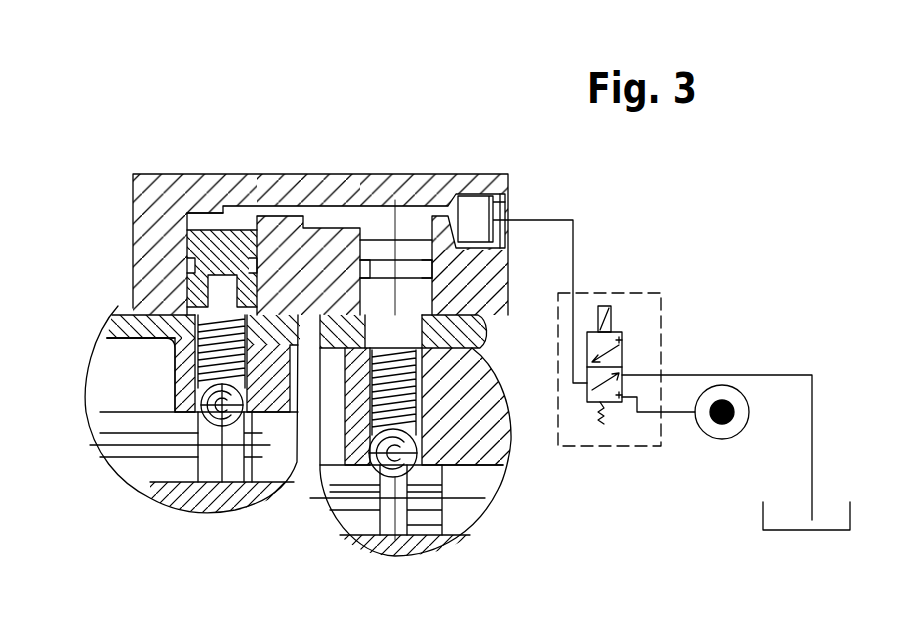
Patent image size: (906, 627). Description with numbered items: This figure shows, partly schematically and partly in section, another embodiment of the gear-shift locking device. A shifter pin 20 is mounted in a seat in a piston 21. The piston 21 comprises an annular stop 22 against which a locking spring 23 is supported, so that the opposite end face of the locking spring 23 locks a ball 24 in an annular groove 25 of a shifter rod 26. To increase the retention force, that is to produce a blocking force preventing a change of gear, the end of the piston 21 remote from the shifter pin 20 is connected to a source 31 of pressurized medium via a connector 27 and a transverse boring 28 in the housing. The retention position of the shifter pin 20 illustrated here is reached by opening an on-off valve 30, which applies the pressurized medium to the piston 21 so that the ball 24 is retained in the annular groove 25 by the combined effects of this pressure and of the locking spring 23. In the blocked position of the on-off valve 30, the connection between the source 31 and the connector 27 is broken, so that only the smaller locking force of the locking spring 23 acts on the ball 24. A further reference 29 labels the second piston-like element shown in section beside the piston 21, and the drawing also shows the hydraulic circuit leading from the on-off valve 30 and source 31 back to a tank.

The shifter pin 20 is at (187, 283).
The piston 21 is at (187, 240).
The annular stop 22 is at (105, 333).
The locking spring 23 is at (190, 360).
The ball 24 is at (178, 418).
The annular groove 25 is at (222, 485).
The shifter rod 26 is at (168, 472).
The connector 27 is at (505, 208).
The transverse boring 28 is at (305, 212).
The second piston 29 is at (405, 270).
The on-off valve 30 is at (622, 352).
The source of pressurized medium 31 is at (703, 435).